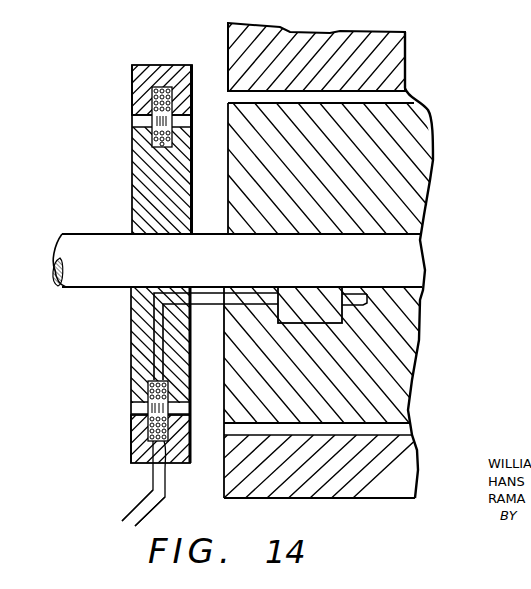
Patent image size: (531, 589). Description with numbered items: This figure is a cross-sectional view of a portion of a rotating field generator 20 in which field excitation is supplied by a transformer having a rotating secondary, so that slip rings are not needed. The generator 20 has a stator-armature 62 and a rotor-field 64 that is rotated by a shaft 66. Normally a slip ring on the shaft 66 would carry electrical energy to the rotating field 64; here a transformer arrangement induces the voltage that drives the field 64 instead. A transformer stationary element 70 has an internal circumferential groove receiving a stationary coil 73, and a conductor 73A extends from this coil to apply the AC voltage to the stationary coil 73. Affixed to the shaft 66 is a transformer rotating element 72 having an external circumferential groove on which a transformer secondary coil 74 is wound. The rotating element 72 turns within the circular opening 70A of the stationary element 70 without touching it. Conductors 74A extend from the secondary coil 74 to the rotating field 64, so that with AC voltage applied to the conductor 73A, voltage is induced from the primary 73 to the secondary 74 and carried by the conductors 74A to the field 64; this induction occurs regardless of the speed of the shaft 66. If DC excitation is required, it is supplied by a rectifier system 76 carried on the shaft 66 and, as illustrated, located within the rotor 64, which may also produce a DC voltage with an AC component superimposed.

The generator 20 is at (443, 332).
The stator-armature 62 is at (403, 74).
The rotor-field 64 is at (433, 168).
The shaft 66 is at (78, 234).
The transformer stationary element 70 is at (138, 78).
The circular opening 70A is at (143, 413).
The transformer rotating element 72 is at (140, 195).
The stationary coil 73 is at (156, 101).
The conductor 73A is at (124, 520).
The transformer secondary coil 74 is at (157, 140).
The conductors 74A is at (153, 349).
The rectifier system 76 is at (297, 308).